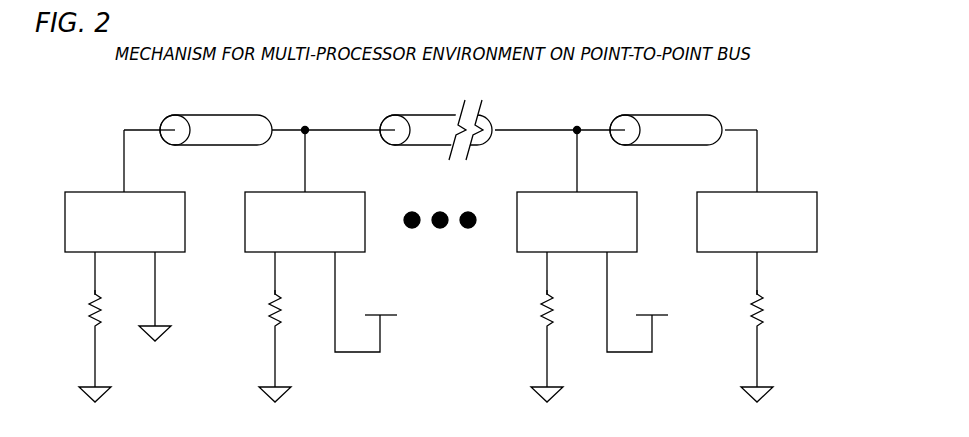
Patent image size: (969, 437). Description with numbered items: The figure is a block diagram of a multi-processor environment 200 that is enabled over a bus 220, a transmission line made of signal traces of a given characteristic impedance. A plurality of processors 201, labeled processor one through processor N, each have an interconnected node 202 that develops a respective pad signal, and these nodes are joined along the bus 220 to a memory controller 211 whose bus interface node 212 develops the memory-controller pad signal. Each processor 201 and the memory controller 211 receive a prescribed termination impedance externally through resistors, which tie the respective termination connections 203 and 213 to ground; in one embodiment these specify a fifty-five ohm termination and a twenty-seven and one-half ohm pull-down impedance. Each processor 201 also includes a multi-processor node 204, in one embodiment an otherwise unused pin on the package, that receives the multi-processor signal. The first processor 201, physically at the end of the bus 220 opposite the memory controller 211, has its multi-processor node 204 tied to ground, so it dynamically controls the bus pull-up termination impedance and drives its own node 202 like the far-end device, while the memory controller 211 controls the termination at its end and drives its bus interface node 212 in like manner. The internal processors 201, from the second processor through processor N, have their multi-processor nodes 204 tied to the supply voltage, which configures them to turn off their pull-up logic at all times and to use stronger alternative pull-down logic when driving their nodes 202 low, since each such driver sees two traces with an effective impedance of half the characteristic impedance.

The multi-processor environment 200 is at (763, 106).
The processor 201 is at (100, 192).
The node 202 is at (124, 190).
The termination resistor connection 203 is at (95, 258).
The multi-processor node 204 is at (155, 258).
The memory controller 211 is at (731, 192).
The bus interface node 212 is at (757, 190).
The memory controller termination resistor connection 213 is at (757, 258).
The bus 220 is at (529, 130).